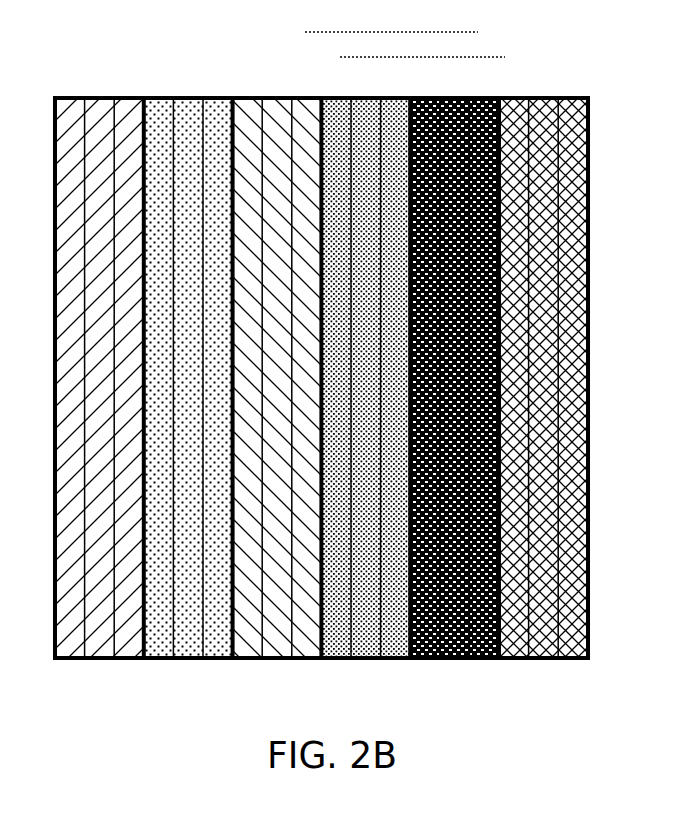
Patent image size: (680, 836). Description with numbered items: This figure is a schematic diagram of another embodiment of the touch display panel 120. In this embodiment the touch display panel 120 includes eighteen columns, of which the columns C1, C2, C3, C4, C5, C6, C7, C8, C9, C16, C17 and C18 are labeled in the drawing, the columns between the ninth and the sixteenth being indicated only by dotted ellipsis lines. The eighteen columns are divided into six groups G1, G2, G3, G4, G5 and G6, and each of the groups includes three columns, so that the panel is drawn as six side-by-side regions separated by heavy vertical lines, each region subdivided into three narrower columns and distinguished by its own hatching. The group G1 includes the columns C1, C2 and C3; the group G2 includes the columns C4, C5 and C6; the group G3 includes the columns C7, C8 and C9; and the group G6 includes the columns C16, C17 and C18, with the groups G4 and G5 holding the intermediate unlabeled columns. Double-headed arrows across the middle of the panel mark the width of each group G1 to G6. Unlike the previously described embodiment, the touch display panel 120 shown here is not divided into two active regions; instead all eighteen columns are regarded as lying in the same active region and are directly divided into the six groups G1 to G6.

The touch display panel 120 is at (362, 340).
The group G1 is at (105, 340).
The group G2 is at (192, 340).
The group G3 is at (279, 340).
The group G4 is at (326, 393).
The group G5 is at (495, 393).
The group G6 is at (543, 340).
The column C1 is at (66, 110).
The column C2 is at (97, 110).
The column C3 is at (122, 110).
The column C4 is at (155, 110).
The column C5 is at (184, 110).
The column C6 is at (215, 110).
The column C7 is at (245, 110).
The column C8 is at (272, 110).
The column C9 is at (302, 110).
The column C16 is at (508, 110).
The column C17 is at (540, 110).
The column C18 is at (570, 110).